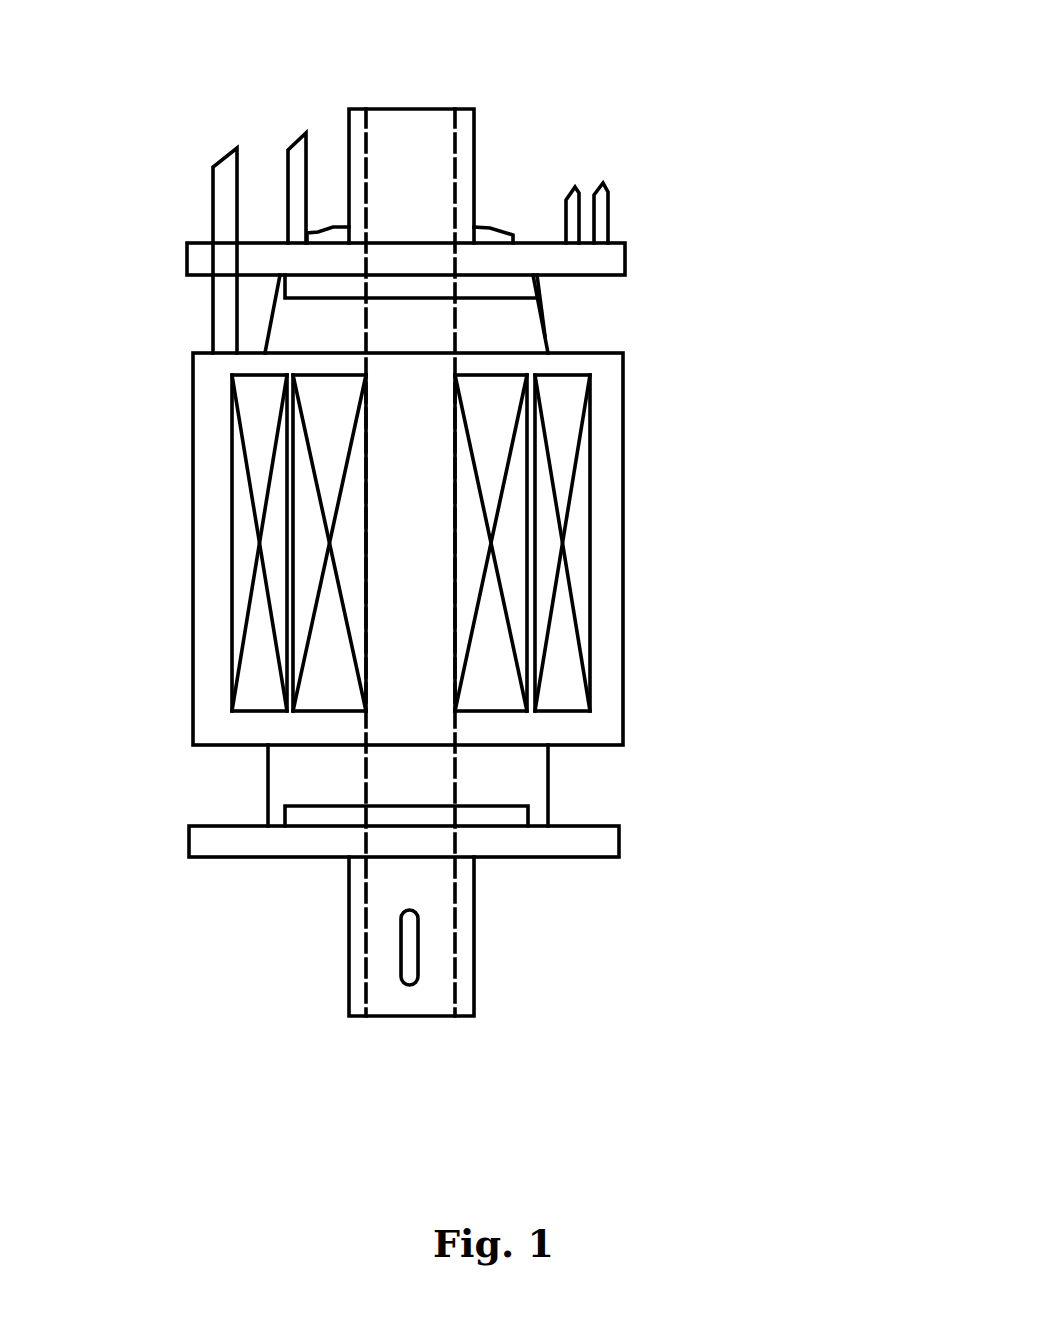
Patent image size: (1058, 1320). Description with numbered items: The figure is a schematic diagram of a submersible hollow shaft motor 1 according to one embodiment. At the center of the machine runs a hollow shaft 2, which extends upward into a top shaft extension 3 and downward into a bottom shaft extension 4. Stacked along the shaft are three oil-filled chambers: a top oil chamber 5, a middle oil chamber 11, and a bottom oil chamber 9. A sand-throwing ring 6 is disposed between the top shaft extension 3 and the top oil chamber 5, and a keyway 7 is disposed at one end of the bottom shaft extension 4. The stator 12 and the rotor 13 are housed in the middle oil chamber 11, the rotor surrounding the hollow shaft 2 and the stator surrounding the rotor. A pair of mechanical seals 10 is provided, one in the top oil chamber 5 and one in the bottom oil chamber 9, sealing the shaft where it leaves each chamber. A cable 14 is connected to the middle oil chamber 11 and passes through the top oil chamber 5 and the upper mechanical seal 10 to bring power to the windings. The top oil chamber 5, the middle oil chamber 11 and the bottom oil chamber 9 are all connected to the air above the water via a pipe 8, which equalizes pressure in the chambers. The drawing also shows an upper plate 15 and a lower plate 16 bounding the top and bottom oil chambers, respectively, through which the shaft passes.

The electric motor assembly 1 is at (859, 42).
The hollow shaft 2 is at (476, 133).
The top shaft extension 3 is at (485, 545).
The bottom shaft extension 4 is at (477, 936).
The top oil chamber 5 is at (543, 307).
The sand-throwing ring 6 is at (457, 189).
The keyway 7 is at (471, 1000).
The pipe 8 is at (298, 145).
The bottom oil chamber 9 is at (548, 786).
The mechanical seal 10 is at (550, 336).
The middle oil chamber 11 is at (623, 470).
The stator 12 is at (315, 579).
The rotor 13 is at (282, 609).
The cable 14 is at (566, 200).
The upper plate 15 is at (625, 260).
The lower plate 16 is at (619, 842).